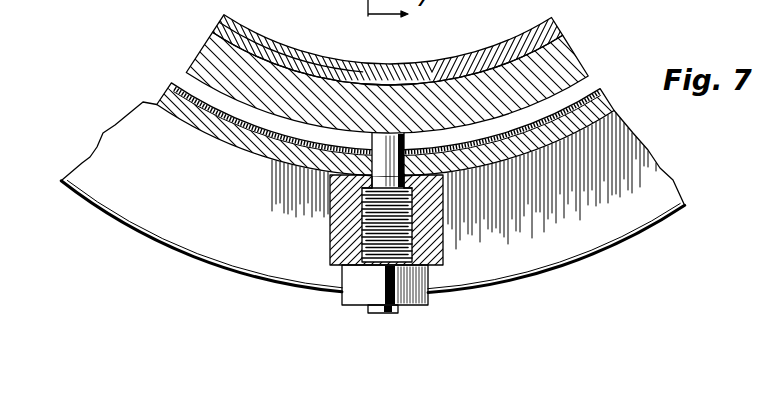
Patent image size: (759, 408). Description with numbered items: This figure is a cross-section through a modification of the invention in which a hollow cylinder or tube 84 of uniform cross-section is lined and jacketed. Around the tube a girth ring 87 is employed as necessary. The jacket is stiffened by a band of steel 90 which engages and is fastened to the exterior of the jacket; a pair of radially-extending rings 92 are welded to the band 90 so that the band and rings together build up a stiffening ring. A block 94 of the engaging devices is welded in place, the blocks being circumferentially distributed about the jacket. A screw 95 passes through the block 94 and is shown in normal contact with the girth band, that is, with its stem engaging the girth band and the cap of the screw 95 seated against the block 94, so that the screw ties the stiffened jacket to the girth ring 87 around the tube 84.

The hollow cylinder or tube 84 is at (477, 52).
The girth ring 87 is at (573, 53).
The band of steel 90 is at (260, 145).
The radially-extending ring 92 is at (625, 170).
The block 94 is at (332, 219).
The screw 95 is at (422, 283).